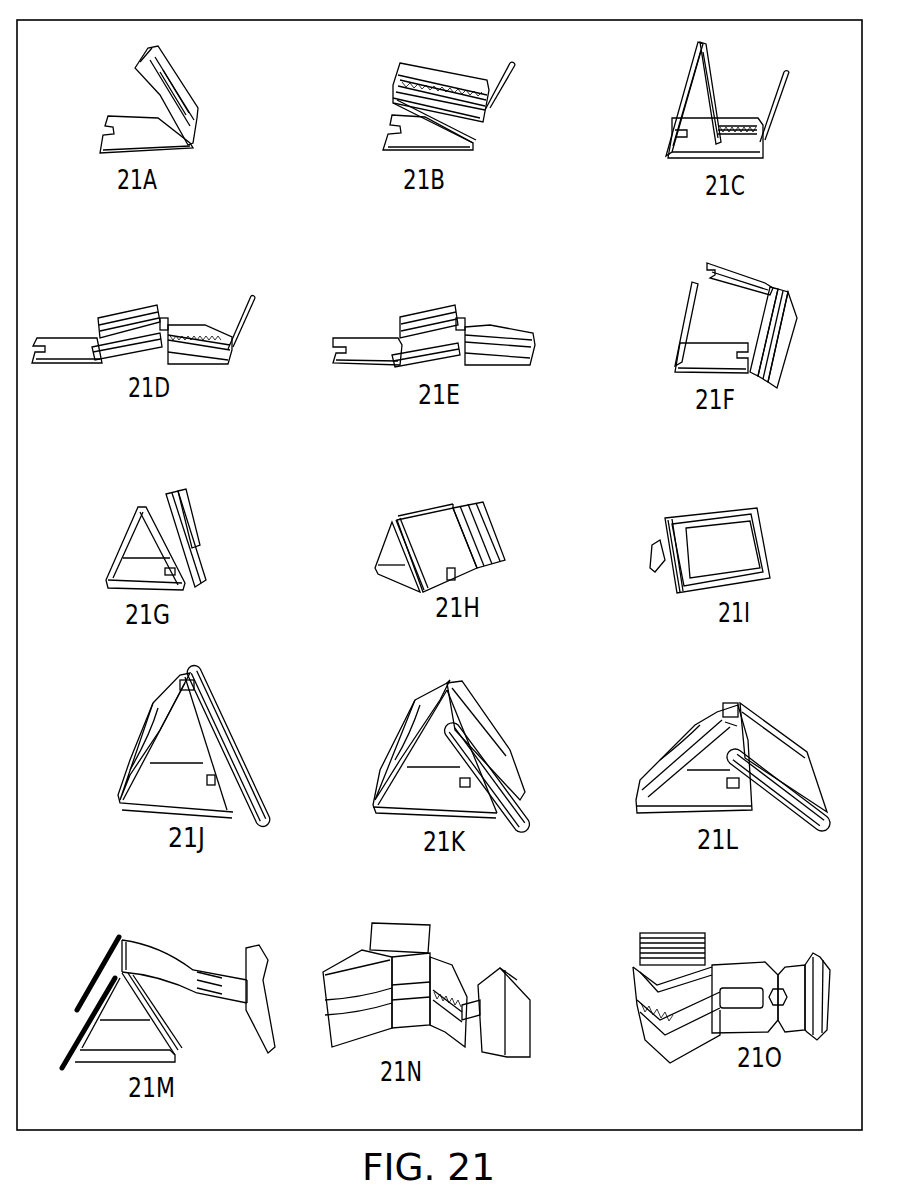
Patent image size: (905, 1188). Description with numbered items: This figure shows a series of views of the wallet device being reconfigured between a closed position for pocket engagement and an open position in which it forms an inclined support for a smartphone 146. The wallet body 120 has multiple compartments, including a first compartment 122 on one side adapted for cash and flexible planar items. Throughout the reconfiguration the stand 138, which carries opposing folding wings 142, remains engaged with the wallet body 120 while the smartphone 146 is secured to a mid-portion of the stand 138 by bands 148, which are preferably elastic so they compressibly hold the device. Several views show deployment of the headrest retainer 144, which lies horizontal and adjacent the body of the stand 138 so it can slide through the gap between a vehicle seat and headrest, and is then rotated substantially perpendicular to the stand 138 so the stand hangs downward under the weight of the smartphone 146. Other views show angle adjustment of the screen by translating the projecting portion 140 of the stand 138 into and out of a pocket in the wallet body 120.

The wallet body 120 is at (163, 140).
The first compartment 122 is at (690, 282).
The stand 138 is at (772, 288).
The projecting portion 140 is at (163, 325).
The folding wings 142 is at (445, 302).
The headrest retainer 144 is at (75, 340).
The smartphone 146 is at (715, 538).
The bands 148 is at (452, 308).